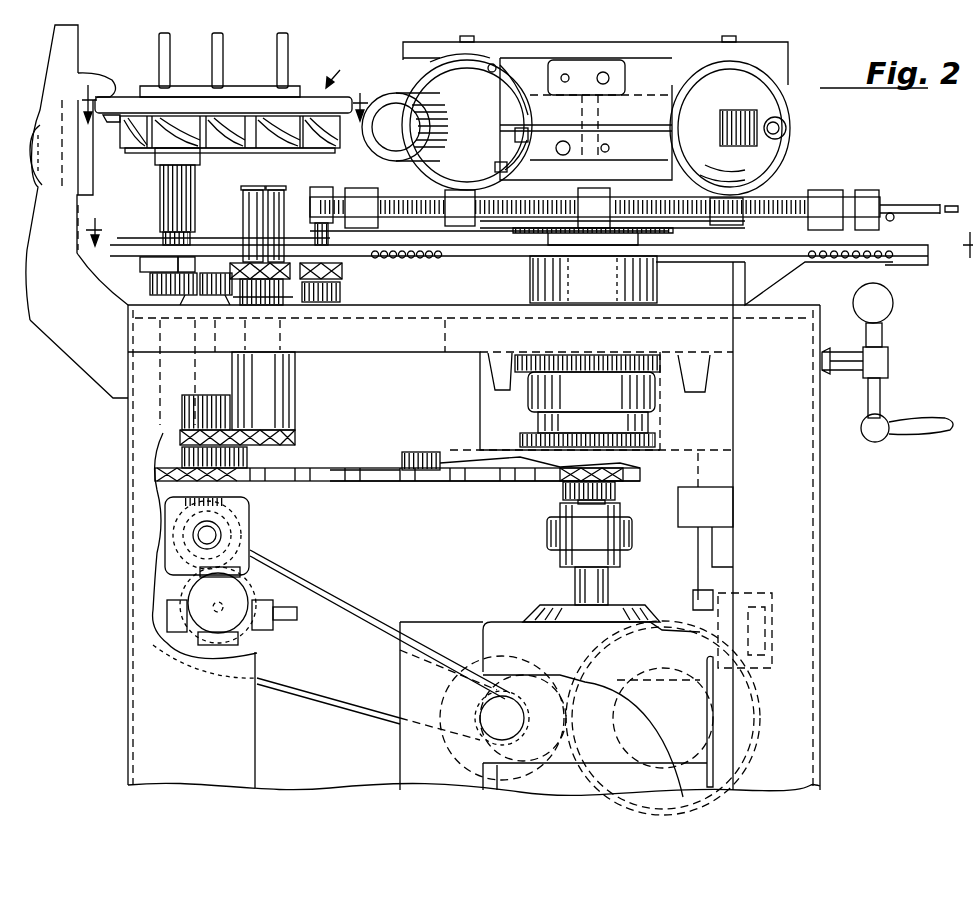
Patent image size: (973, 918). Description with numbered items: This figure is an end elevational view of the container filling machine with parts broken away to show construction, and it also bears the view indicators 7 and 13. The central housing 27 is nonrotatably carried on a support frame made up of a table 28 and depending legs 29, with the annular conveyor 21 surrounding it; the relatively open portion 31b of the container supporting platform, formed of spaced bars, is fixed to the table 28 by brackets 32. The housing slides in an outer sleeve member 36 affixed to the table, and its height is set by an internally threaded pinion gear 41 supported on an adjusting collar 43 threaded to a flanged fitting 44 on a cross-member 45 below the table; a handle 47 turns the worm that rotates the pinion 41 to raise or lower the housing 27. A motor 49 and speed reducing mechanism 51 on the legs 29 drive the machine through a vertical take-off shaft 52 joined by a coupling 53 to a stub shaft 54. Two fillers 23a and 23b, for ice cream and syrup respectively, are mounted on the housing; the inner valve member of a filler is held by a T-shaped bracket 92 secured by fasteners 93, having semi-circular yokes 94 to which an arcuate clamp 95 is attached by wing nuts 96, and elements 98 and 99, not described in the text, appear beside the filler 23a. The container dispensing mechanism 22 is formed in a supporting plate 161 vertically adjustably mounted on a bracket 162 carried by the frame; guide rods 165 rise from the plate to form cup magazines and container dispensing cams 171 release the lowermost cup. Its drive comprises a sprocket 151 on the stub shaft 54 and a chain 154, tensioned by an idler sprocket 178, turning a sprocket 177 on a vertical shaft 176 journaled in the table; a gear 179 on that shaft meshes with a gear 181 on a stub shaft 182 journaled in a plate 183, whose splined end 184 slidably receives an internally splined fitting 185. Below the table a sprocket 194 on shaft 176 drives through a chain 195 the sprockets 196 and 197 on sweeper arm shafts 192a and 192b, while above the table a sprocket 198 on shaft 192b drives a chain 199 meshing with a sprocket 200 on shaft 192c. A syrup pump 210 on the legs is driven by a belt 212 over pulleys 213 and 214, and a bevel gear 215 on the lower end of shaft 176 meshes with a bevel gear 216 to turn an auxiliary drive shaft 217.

The section line 7 is at (100, 226).
The section line 13 is at (233, 99).
The conveyor 21 is at (890, 197).
The container dispensing mechanism 22 is at (342, 70).
The filler 23a is at (425, 84).
The filler 23b is at (770, 98).
The central housing 27 is at (590, 40).
The table 28 is at (430, 302).
The legs 29 is at (805, 557).
The open portion of container supporting platform 31b is at (710, 255).
The brackets 32 is at (863, 268).
The outer sleeve member 36 is at (657, 290).
The pinion gear 41 is at (615, 357).
The adjusting collar 43 is at (650, 395).
The flanged fitting 44 is at (660, 440).
The cross-member 45 is at (668, 470).
The handle 47 is at (880, 398).
The motor 49 is at (740, 735).
The speed reducing mechanism 51 is at (513, 633).
The take-off shaft 52 is at (603, 587).
The coupling 53 is at (627, 535).
The stub shaft 54 is at (570, 497).
The T-shaped bracket 92 is at (583, 72).
The fasteners 93 is at (610, 78).
The semi-circular yokes 94 is at (477, 67).
The arcuate clamp 95 is at (500, 165).
The wing nuts 96 is at (520, 130).
The tube 98 is at (372, 141).
The strap 99 is at (440, 63).
The sprocket 151 is at (560, 482).
The chain 154 is at (330, 467).
The supporting plate 161 is at (297, 103).
The bracket 162 is at (69, 211).
The guide rods 165 is at (213, 48).
The container dispensing cam 171 is at (240, 152).
The shaft 176 is at (232, 392).
The sprocket 177 is at (242, 473).
The idler sprocket 178 is at (425, 470).
The gear 179 is at (230, 280).
The gear 181 is at (147, 287).
The stub shaft 182 is at (162, 267).
The plate 183 is at (195, 245).
The splined upper end 184 is at (187, 230).
The internally splined fitting 185 is at (165, 193).
The sweeper arm shaft 192a is at (278, 230).
The sweeper arm shaft 192b is at (250, 227).
The sweeper arm shaft 192c is at (330, 240).
The sprocket 194 is at (182, 433).
The chain 195 is at (235, 395).
The sprocket 196 is at (292, 435).
The sprocket 197 is at (280, 415).
The sprocket 198 is at (250, 275).
The chain 199 is at (337, 263).
The sprocket 200 is at (337, 277).
The syrup pump 210 is at (262, 585).
The belt 212 is at (352, 612).
The pulley 213 is at (467, 747).
The pulley 214 is at (272, 645).
The bevel gear 215 is at (248, 500).
The bevel gear 216 is at (240, 530).
The auxiliary drive shaft 217 is at (200, 535).